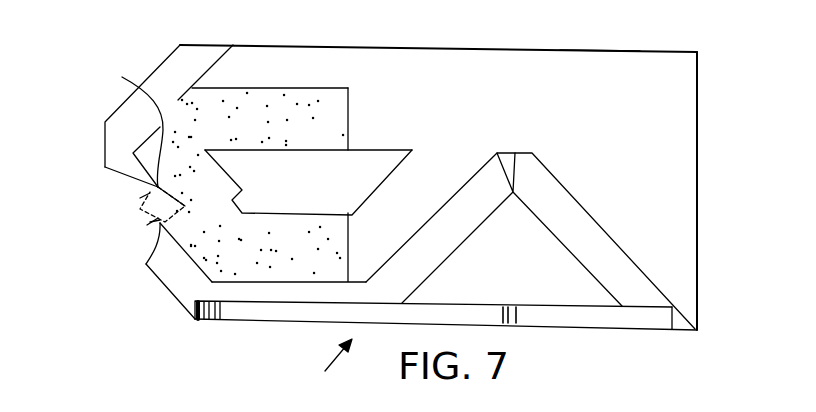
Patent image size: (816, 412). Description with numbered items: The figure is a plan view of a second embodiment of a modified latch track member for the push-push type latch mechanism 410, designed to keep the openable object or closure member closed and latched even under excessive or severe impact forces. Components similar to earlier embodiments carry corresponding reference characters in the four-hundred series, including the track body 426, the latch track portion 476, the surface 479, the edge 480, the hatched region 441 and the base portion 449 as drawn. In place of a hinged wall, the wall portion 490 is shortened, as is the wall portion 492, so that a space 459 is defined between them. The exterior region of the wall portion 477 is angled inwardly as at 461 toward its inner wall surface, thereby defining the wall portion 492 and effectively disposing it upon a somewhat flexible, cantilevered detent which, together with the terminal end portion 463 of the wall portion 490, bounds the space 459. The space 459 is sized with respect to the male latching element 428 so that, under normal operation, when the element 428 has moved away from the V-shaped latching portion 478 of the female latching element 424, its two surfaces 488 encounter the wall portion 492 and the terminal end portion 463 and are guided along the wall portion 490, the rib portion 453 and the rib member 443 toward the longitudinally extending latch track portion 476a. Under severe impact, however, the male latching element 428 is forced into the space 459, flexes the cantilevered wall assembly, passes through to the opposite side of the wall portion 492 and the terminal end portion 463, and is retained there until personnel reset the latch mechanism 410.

The latch mechanism 410 is at (326, 372).
The female latching element 424 is at (357, 172).
The body block 426 is at (697, 125).
The male latching element 428 is at (172, 212).
The hatched layer 441 is at (253, 264).
The rib member 443 is at (575, 227).
The base strip 449 is at (572, 321).
The rib portion 453 is at (289, 293).
The space 459 is at (150, 222).
The inwardly angled region 461 is at (115, 174).
The terminal end portion 463 is at (160, 223).
The top surface 476 is at (355, 72).
The longitudinally extending latch track portion 476a is at (567, 75).
The wall portion 477 is at (119, 124).
The V-shaped latching portion 478 is at (242, 190).
The chamfer band 479 is at (178, 102).
The bar top edge 480 is at (396, 153).
The surfaces of the male latching element 488 is at (150, 193).
The wall portion 490 is at (185, 254).
The wall portion 492 is at (156, 190).